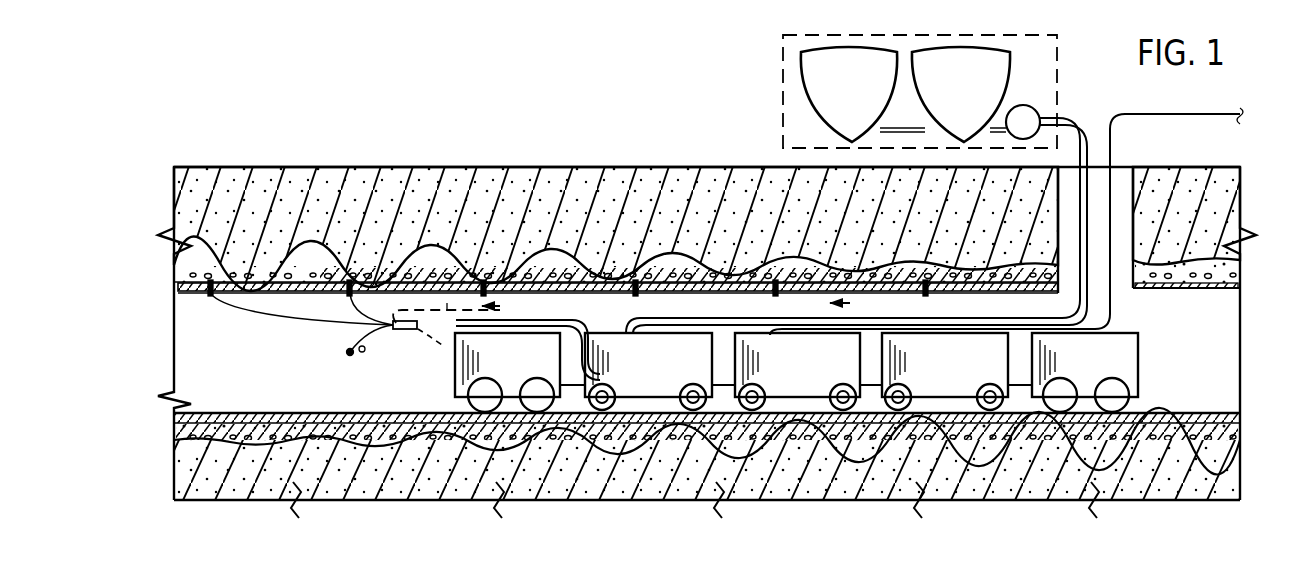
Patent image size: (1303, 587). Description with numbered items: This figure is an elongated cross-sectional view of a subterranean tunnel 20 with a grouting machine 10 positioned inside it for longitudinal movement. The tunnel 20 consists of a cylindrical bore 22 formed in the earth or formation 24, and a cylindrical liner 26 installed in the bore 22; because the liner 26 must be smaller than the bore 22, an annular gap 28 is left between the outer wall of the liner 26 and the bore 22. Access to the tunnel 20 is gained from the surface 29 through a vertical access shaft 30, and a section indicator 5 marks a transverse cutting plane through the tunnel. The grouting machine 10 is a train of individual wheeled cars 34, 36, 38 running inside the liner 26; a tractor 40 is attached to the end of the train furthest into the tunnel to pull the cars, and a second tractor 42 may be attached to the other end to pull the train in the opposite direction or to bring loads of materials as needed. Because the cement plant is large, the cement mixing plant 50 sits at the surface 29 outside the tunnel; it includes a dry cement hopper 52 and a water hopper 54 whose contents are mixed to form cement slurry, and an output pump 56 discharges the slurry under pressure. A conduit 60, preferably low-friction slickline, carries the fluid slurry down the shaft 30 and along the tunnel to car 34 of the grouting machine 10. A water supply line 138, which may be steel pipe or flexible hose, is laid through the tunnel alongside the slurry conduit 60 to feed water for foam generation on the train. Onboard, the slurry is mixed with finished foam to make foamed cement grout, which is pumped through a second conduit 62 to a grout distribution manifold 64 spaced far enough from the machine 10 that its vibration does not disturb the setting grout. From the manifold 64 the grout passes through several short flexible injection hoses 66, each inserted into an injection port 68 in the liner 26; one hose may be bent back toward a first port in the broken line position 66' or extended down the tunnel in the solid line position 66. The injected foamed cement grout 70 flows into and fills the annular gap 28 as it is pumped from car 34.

The section line 5- 5 is at (437, 242).
The grouting machine 10 is at (320, 390).
The subterranean tunnel 20 is at (170, 332).
The cylindrical bore 22 is at (183, 266).
The earth or formation 24 is at (288, 182).
The cylindrical liner 26 is at (196, 291).
The annular gap 28 is at (183, 281).
The surface 29 is at (356, 166).
The vertical access shaft 30 is at (1128, 166).
The wheeled car 34 is at (634, 370).
The wheeled car 36 is at (783, 370).
The wheeled car 38 is at (931, 370).
The tractor 40 is at (496, 370).
The second tractor 42 is at (1071, 370).
The cement mixing plant 50 is at (776, 76).
The dry cement hopper 52 is at (838, 101).
The water hopper 54 is at (948, 101).
The output pump 56 is at (1041, 115).
The conduit 60 is at (1090, 141).
The second conduit 62 is at (545, 321).
The grout distribution manifold 64 is at (401, 331).
The injection hoses 66 is at (303, 322).
The broken line image of injection hose 66' is at (437, 350).
The injection port 68 is at (208, 298).
The injected foamed cement grout 70 is at (546, 268).
The water supply line 138 is at (1115, 317).